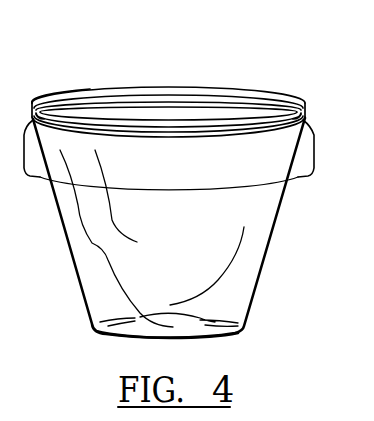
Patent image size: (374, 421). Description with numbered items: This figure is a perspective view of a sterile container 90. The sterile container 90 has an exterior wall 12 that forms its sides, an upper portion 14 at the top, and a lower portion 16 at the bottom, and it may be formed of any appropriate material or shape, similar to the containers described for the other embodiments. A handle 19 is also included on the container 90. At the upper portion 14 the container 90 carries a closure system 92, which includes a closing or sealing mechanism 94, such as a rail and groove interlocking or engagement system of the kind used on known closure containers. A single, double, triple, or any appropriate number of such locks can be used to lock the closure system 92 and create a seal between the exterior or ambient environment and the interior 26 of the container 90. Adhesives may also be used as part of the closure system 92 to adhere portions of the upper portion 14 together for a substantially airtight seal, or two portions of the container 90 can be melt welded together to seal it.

The exterior wall 12 is at (265, 205).
The upper portion 14 is at (171, 75).
The lower portion 16 is at (238, 345).
The handle 19 is at (35, 162).
The interior 26 is at (183, 106).
The sterile container 90 is at (174, 195).
The closure system 92 is at (84, 81).
The sealing mechanism 94 is at (139, 98).